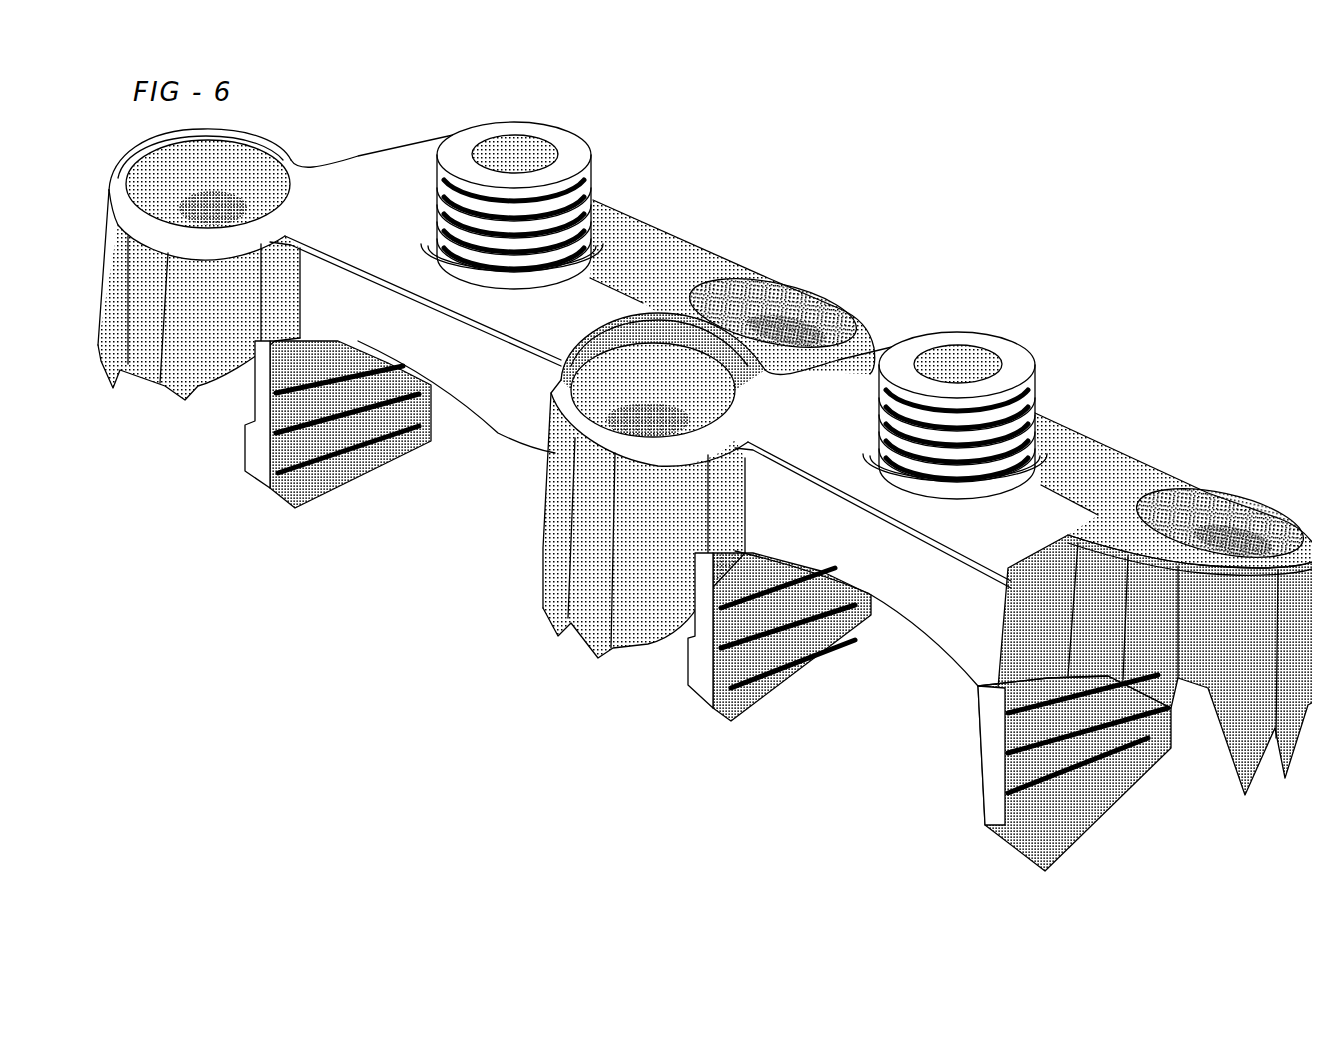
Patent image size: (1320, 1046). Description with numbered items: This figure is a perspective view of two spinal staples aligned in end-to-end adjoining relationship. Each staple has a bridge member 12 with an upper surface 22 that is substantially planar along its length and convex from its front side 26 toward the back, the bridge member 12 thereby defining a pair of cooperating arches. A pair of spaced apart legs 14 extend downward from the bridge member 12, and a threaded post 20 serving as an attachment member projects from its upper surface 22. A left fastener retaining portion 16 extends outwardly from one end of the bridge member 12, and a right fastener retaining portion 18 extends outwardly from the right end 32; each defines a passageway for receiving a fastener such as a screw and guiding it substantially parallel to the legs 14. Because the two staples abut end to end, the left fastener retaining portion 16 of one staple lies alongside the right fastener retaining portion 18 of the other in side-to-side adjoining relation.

The bridge member 12 is at (633, 217).
The legs 14 is at (345, 475).
The left fastener retaining portion 16 is at (227, 150).
The right fastener retaining portion 18 is at (838, 292).
The threaded post 20 is at (560, 140).
The upper surface 22 is at (693, 247).
The front side 26 is at (493, 420).
The right end 32 is at (1030, 677).